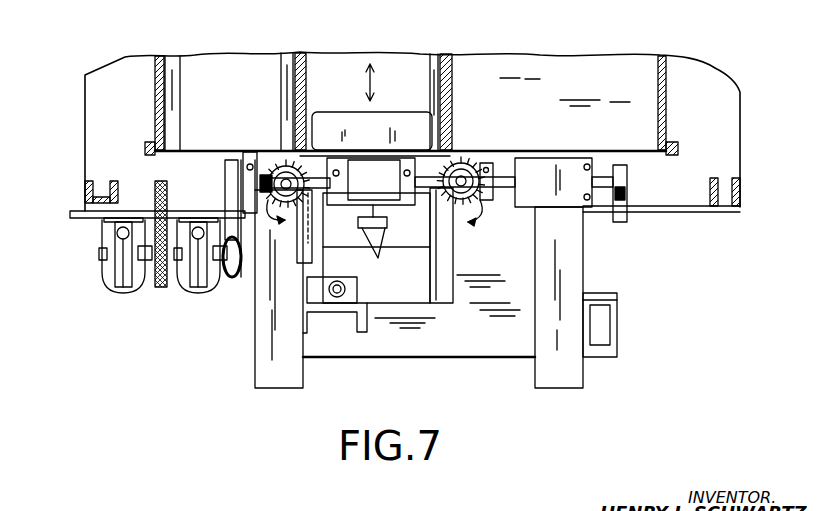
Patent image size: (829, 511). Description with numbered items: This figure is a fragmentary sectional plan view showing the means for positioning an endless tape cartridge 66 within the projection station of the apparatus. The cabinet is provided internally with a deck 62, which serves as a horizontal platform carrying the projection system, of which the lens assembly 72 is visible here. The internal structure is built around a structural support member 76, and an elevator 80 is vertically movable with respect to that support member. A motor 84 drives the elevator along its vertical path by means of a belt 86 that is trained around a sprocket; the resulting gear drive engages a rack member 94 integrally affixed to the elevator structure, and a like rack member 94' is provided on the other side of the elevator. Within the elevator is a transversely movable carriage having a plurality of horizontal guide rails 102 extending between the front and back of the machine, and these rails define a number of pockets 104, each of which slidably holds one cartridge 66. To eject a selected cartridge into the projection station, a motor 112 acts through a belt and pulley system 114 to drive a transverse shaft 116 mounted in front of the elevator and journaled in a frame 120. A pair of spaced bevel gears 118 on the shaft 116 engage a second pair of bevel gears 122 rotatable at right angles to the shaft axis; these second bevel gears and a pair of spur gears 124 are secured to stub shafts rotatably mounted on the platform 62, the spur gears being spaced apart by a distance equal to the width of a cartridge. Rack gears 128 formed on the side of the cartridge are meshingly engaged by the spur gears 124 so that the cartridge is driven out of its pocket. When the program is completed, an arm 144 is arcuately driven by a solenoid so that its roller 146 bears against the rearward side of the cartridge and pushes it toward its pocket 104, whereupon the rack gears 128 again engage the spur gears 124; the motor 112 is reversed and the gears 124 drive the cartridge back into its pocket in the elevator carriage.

The deck 62 is at (500, 341).
The endless tape cartridge 66 is at (354, 103).
The lens assembly 72 is at (339, 299).
The structural support member 76 is at (85, 192).
The elevator 80 is at (555, 88).
The motor 84 is at (110, 279).
The belt 86 is at (168, 216).
The rack member 94 is at (136, 133).
The rack member 94' is at (696, 141).
The horizontal guide rail 102 is at (190, 62).
The pocket 104 is at (236, 105).
The motor 112 is at (197, 291).
The belt and pulley system 114 is at (233, 270).
The transverse shaft 116 is at (505, 178).
The bevel gear 118 is at (272, 170).
The frame 120 is at (566, 172).
The bevel gear 122 is at (270, 220).
The spur gear 124 is at (300, 224).
The rack gear 128 is at (438, 130).
The arm 144 is at (375, 218).
The roller 146 is at (378, 258).